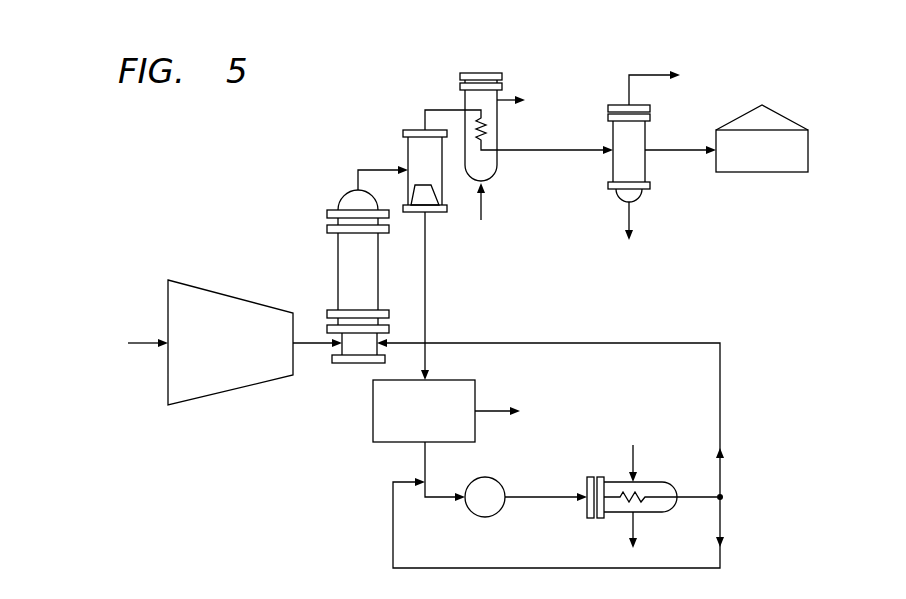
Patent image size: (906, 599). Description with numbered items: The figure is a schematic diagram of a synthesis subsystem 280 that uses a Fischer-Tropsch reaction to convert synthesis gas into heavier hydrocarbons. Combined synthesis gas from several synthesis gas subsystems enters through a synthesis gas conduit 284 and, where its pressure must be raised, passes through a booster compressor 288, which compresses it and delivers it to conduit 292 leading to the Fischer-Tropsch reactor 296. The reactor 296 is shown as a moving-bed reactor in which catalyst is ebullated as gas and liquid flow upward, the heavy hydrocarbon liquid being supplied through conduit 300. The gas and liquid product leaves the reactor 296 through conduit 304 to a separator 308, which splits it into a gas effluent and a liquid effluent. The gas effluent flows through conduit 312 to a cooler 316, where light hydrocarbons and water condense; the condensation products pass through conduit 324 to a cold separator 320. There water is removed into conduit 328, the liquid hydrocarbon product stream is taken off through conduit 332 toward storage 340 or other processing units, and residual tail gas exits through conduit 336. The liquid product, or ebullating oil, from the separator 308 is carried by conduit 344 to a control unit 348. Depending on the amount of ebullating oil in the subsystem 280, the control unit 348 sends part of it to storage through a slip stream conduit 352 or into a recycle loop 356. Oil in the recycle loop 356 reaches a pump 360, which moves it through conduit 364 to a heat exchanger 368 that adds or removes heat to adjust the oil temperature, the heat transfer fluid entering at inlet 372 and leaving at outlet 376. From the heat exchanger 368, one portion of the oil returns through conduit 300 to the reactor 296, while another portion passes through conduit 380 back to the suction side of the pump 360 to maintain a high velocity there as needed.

The synthesis subsystem 280 is at (203, 143).
The synthesis gas conduit 284 is at (142, 346).
The booster compressor 288 is at (231, 391).
The conduit 292 is at (305, 347).
The Fischer-Tropsch reactor 296 is at (337, 272).
The conduit 300 is at (722, 478).
The conduit 304 is at (356, 182).
The separator 308 is at (405, 155).
The conduit 312 is at (440, 108).
The cooler 316 is at (481, 72).
The cold separator 320 is at (611, 164).
The conduit 324 is at (510, 152).
The conduit 328 is at (631, 218).
The conduit 332 is at (676, 152).
The conduit 336 is at (651, 73).
The storage 340 is at (763, 174).
The conduit 344 is at (426, 298).
The control unit 348 is at (372, 412).
The slip stream conduit 352 is at (494, 408).
The recycle loop 356 is at (424, 472).
The pump 360 is at (486, 518).
The conduit 364 is at (536, 500).
The heat exchanger 368 is at (613, 519).
The heat transfer fluid inlet 372 is at (635, 463).
The heat transfer fluid outlet 376 is at (635, 525).
The conduit 380 is at (722, 517).